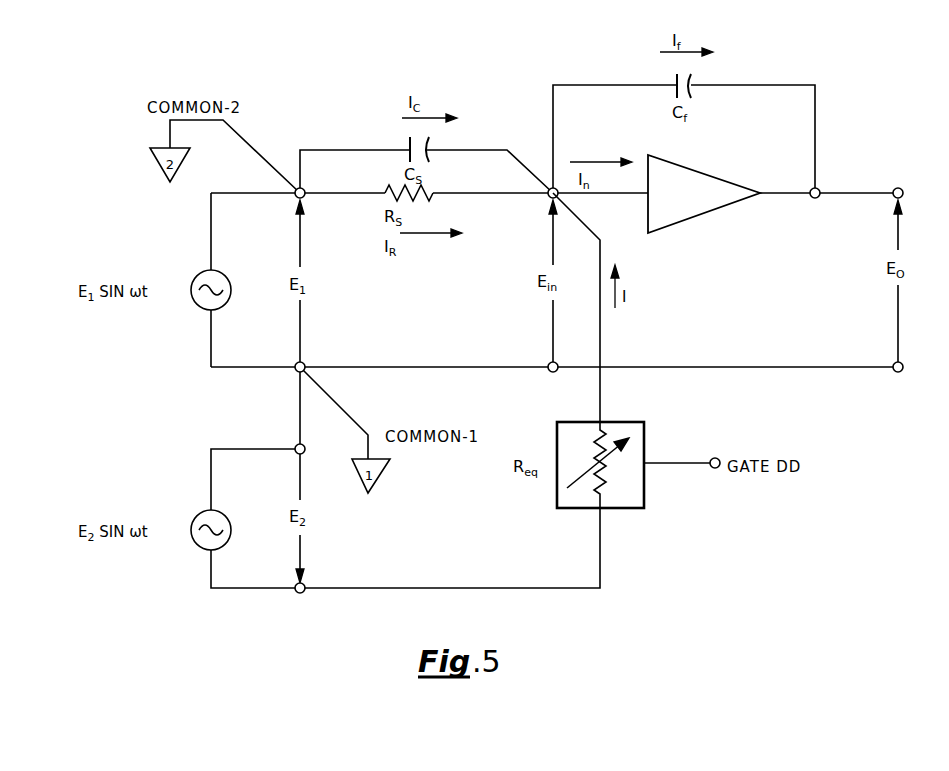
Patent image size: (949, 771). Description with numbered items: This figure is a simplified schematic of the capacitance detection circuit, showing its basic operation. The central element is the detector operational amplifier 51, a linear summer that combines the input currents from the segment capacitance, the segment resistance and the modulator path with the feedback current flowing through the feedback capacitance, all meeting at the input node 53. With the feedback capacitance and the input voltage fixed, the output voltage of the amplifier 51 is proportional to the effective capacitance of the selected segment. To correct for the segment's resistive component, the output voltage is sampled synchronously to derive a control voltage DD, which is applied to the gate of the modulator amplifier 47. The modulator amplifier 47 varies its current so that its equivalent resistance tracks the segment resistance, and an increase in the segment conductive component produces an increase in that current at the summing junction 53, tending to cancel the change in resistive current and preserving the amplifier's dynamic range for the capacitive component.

The modulator amplifier 47 is at (635, 422).
The detector operational amplifier 51 is at (705, 217).
The input node 53 is at (549, 197).